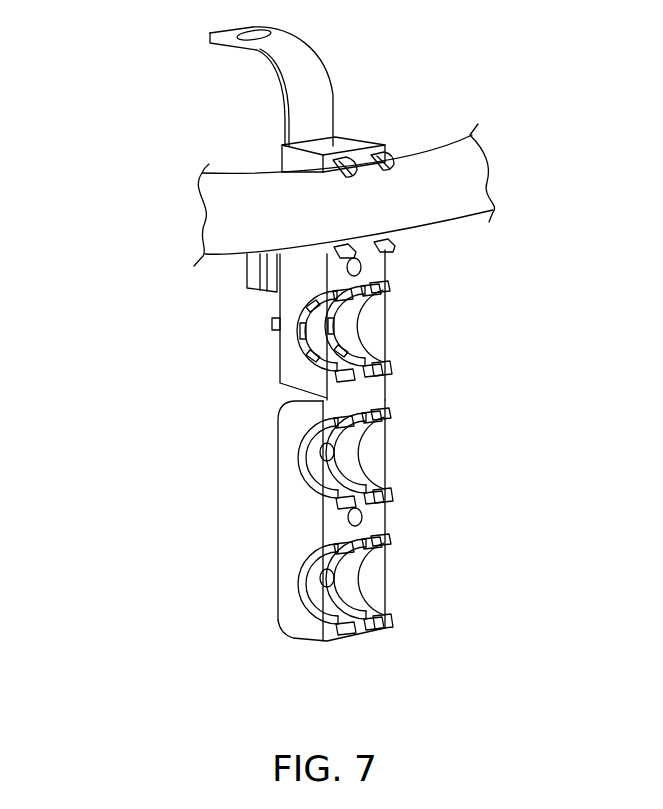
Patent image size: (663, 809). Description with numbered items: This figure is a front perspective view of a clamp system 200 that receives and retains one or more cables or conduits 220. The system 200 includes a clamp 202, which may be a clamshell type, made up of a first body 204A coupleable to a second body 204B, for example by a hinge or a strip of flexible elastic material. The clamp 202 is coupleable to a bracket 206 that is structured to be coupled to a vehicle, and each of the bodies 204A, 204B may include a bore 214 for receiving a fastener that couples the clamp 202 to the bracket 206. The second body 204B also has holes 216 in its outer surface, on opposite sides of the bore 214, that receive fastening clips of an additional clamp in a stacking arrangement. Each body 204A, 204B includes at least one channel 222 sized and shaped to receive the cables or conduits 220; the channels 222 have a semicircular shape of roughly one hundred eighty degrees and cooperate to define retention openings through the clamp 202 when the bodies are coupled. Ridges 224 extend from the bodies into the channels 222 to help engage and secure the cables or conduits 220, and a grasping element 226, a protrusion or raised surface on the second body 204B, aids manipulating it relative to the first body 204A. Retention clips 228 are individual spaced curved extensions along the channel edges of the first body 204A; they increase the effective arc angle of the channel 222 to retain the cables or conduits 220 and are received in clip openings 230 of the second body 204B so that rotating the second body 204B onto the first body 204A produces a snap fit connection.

The clamp system 200 is at (146, 137).
The clamp 202 is at (218, 402).
The first body 204A is at (348, 146).
The second body 204B is at (298, 532).
The bracket 206 is at (303, 58).
The central bore 214 is at (360, 267).
The holes 216 is at (320, 452).
The cables or conduits 220 is at (451, 160).
The channel 222 is at (343, 560).
The ridges 224 is at (360, 592).
The grasping element 226 is at (350, 640).
The retention clips 228 is at (362, 299).
The clip openings 230 is at (322, 428).